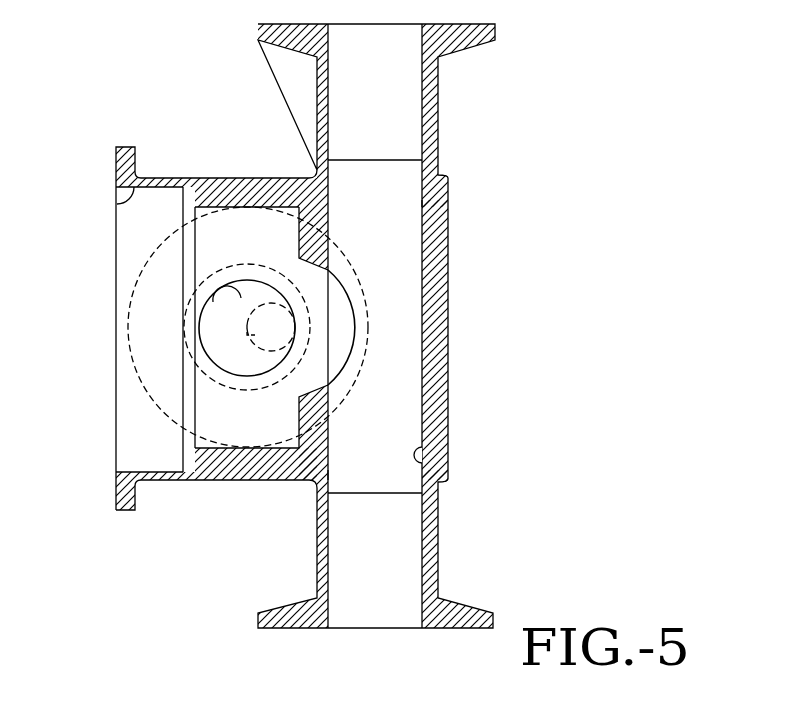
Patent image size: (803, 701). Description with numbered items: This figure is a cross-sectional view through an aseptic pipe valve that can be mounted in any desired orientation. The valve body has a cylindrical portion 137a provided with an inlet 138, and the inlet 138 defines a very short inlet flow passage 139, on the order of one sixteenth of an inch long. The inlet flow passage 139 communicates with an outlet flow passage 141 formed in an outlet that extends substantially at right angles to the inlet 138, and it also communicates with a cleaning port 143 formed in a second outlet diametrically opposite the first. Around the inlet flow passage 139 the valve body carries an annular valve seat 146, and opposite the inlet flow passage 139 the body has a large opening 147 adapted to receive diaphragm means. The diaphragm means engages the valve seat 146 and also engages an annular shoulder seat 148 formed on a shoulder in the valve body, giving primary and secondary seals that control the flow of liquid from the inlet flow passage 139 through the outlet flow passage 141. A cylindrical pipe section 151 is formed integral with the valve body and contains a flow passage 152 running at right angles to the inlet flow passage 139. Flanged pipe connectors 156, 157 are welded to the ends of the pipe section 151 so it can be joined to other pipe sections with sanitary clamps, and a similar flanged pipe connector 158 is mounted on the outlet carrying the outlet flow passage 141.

The cylindrical portion 137a is at (240, 177).
The inlet 138 is at (326, 250).
The inlet flow passage 139 is at (343, 362).
The outlet flow passage 141 is at (213, 302).
The cleaning port 143 is at (257, 344).
The annular valve seat 146 is at (314, 393).
The large opening 147 is at (117, 208).
The annular shoulder seat 148 is at (190, 455).
The cylindrical pipe section 151 is at (447, 432).
The flow passage 152 is at (412, 463).
The flanged pipe connector 156 is at (427, 537).
The flanged pipe connector 157 is at (427, 88).
The flanged pipe connector 158 is at (130, 378).